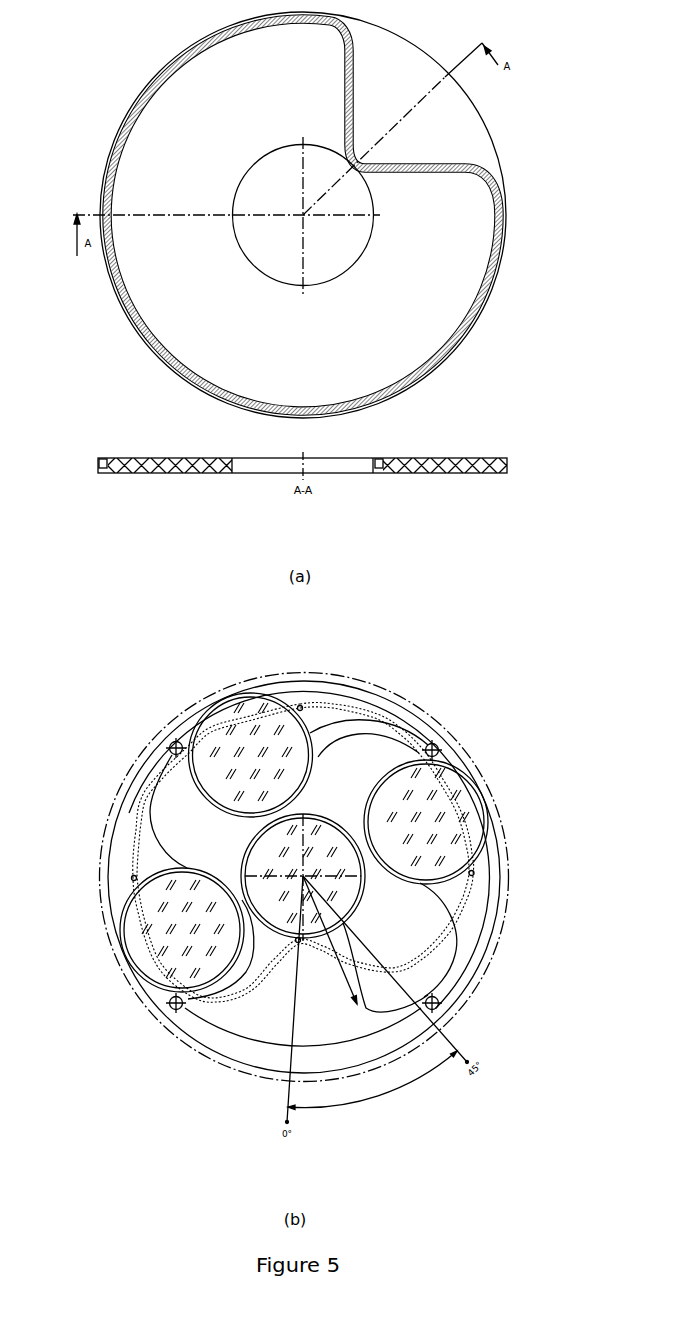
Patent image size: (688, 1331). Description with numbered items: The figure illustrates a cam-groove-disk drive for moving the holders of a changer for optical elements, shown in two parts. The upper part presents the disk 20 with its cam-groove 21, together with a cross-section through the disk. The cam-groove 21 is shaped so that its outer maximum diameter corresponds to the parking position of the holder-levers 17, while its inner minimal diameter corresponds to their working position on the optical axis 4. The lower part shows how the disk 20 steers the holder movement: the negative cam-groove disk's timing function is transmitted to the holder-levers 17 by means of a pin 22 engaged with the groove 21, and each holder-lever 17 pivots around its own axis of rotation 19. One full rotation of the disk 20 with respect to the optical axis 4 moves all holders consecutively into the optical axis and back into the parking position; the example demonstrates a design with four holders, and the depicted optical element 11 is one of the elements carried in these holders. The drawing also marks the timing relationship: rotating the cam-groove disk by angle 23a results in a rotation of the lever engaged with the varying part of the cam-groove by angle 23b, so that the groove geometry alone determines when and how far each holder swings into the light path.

The disk 20 is at (165, 127).
The cam-groove 21 is at (467, 167).
The optical axis 4 is at (305, 217).
The holder-levers 17 is at (316, 692).
The lens 11 is at (423, 821).
The pin 22 is at (132, 876).
The lever rotation angle 23b is at (351, 950).
The disk rotation angle 23a is at (386, 1096).
The axis of rotation 19 is at (172, 1006).